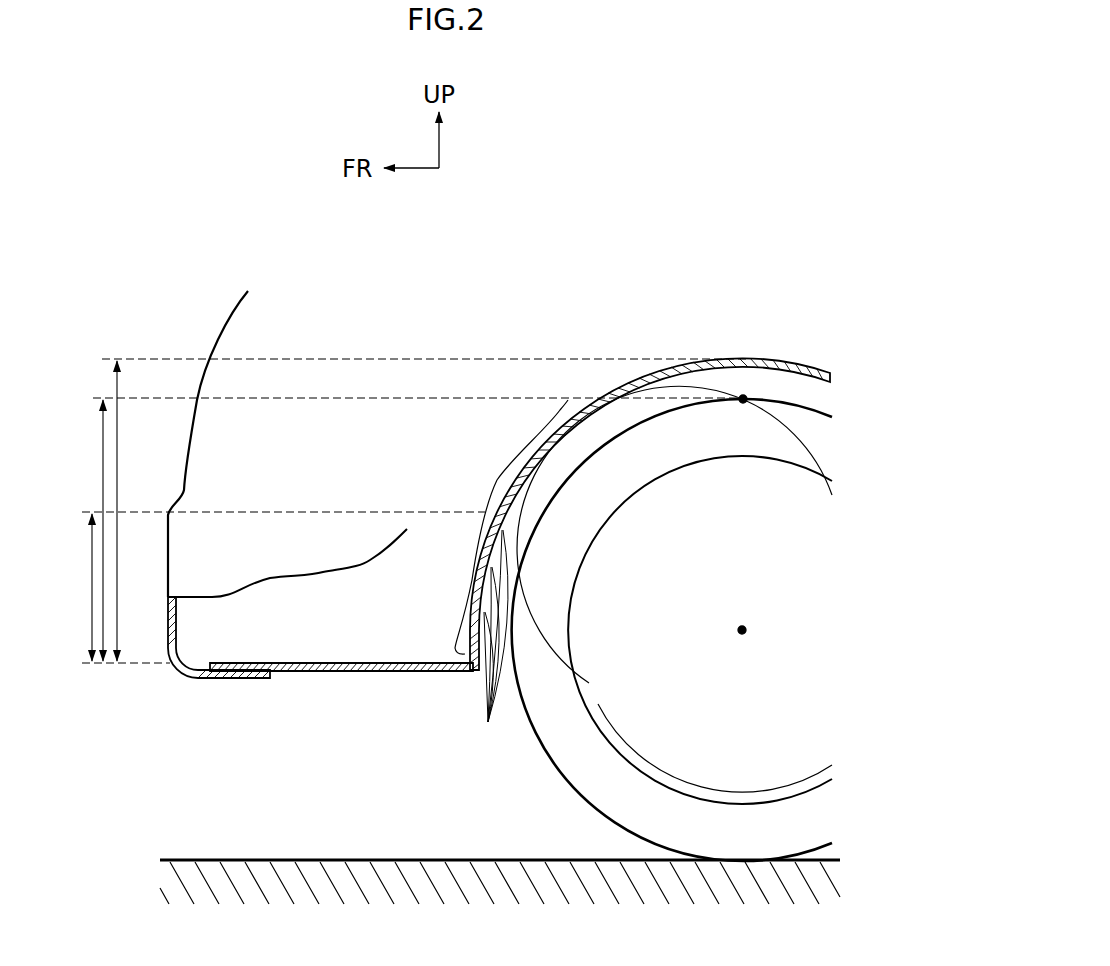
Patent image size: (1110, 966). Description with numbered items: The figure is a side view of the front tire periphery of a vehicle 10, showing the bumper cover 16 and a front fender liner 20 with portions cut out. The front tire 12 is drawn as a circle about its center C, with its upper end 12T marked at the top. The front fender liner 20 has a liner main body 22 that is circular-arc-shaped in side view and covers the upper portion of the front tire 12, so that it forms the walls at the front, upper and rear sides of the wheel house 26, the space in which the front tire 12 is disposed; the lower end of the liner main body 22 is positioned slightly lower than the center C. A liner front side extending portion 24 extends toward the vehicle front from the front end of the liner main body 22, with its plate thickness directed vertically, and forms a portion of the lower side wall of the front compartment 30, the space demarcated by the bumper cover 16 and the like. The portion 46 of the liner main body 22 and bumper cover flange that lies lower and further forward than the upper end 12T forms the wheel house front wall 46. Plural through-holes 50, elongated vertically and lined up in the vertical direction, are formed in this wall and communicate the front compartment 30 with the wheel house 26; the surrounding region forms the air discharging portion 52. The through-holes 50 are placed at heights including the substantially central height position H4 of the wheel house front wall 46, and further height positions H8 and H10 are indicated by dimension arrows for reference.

The vehicle 10 is at (168, 324).
The front tire 12 is at (604, 812).
The upper end of the front tire 12T is at (743, 394).
The bumper cover 16 is at (184, 676).
The front fender liner 20 is at (798, 360).
The liner main body 22 is at (642, 375).
The liner front side extending portion 24 is at (343, 675).
The wheel house 26 is at (555, 504).
The front compartment 30 is at (365, 629).
The wheel house front wall 46 is at (497, 478).
The through-holes 50 is at (493, 642).
The air discharging portion 52 is at (452, 528).
The height position H4 is at (91, 583).
The height H8 is at (100, 463).
The height H10 is at (118, 463).
The center of the front tire C is at (752, 617).